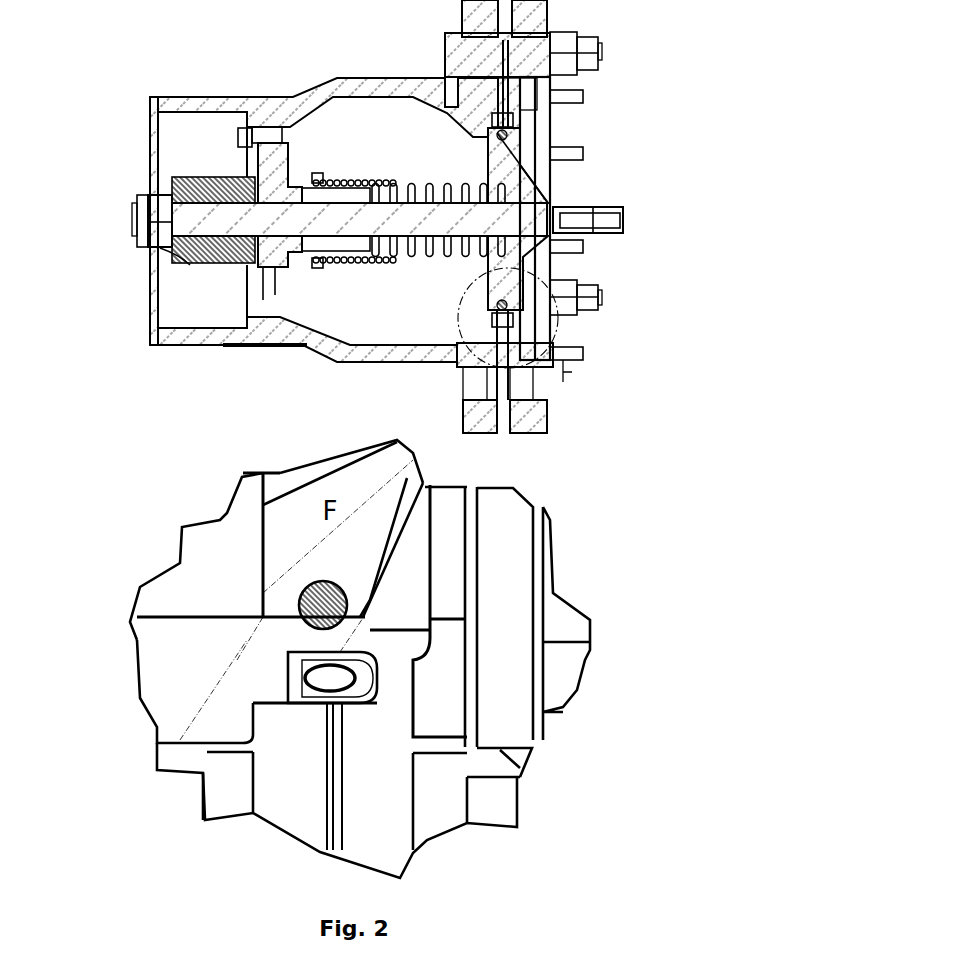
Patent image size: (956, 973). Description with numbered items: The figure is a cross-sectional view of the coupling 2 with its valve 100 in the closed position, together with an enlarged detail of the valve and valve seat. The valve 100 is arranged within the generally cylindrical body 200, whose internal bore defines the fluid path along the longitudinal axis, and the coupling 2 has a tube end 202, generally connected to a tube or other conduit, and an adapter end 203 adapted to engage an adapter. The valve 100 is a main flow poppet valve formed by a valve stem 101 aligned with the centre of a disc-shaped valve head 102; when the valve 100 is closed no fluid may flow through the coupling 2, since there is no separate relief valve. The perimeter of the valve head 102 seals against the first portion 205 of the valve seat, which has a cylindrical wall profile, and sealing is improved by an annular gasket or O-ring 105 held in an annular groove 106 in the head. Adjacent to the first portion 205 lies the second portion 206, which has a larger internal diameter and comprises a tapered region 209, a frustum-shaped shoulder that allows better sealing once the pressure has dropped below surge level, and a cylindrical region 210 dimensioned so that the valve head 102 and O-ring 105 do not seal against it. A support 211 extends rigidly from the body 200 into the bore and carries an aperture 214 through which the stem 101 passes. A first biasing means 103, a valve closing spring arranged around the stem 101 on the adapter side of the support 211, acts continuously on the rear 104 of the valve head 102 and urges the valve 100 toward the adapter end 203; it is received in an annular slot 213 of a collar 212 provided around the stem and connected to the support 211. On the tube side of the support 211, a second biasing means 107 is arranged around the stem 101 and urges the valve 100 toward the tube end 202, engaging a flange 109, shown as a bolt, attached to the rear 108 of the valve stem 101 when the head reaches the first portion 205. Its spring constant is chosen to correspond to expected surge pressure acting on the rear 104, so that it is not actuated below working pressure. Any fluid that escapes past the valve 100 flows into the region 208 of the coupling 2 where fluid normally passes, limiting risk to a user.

The coupling 2 is at (272, 84).
The valve 100 is at (332, 232).
The valve stem 101 is at (437, 222).
The valve head 102 is at (555, 205).
The first biasing means 103 is at (366, 180).
The rear of the valve head 104 is at (492, 153).
The annular gasket or O-ring 105 is at (307, 597).
The annular groove 106 is at (330, 583).
The second biasing means 107 is at (237, 176).
The rear of the valve stem 108 is at (222, 203).
The flange 109 is at (160, 250).
The body 200 is at (362, 82).
The tube end 202 is at (172, 140).
The adapter end 203 is at (552, 165).
The first portion 205 is at (242, 615).
The second portion 206 is at (393, 627).
The region 208 is at (392, 344).
The tapered region 209 is at (360, 613).
The cylindrical region 210 is at (430, 587).
The support 211 is at (275, 163).
The collar 212 is at (297, 262).
The annular slot 213 is at (330, 264).
The aperture 214 is at (273, 275).